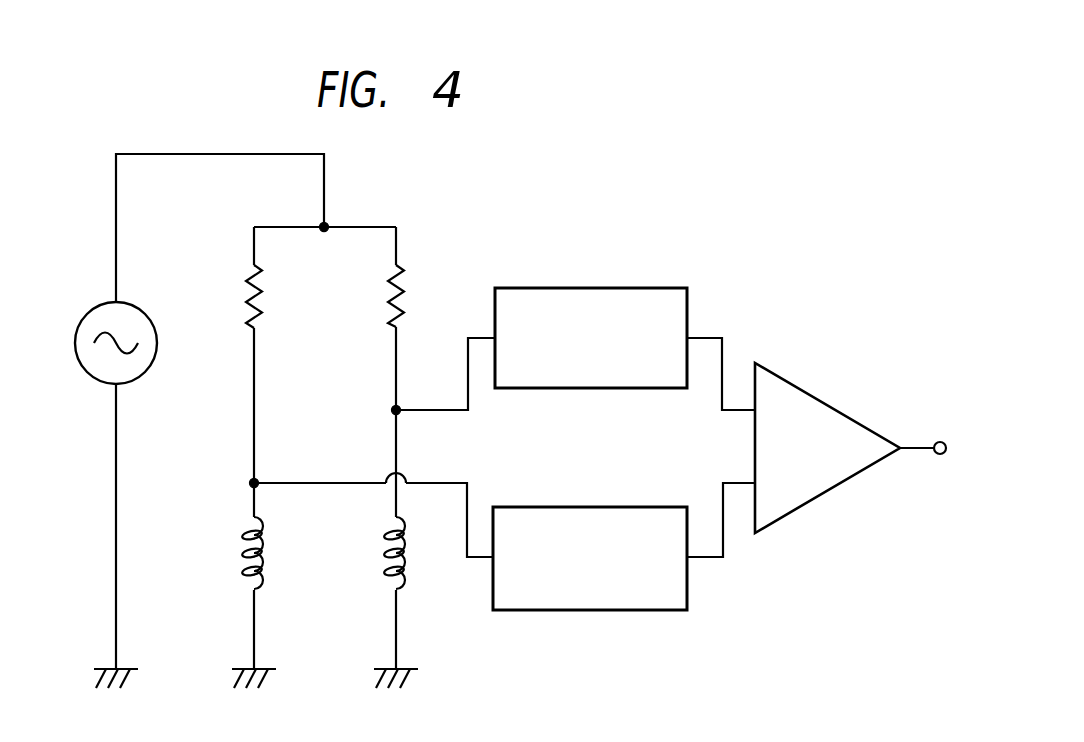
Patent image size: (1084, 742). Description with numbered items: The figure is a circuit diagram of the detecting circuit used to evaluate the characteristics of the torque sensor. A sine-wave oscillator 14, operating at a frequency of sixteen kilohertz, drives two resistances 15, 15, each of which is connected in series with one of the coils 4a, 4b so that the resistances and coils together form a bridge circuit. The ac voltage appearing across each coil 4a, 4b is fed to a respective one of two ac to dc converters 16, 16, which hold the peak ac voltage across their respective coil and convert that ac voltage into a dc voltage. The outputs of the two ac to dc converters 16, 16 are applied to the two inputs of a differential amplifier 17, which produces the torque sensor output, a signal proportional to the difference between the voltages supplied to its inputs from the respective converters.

The sine-wave oscillator 14 is at (157, 360).
The resistance 15 is at (252, 270).
The coil 4a is at (242, 562).
The coil 4b is at (406, 566).
The ac to dc converter 16 is at (674, 288).
The differential amplifier 17 is at (815, 398).